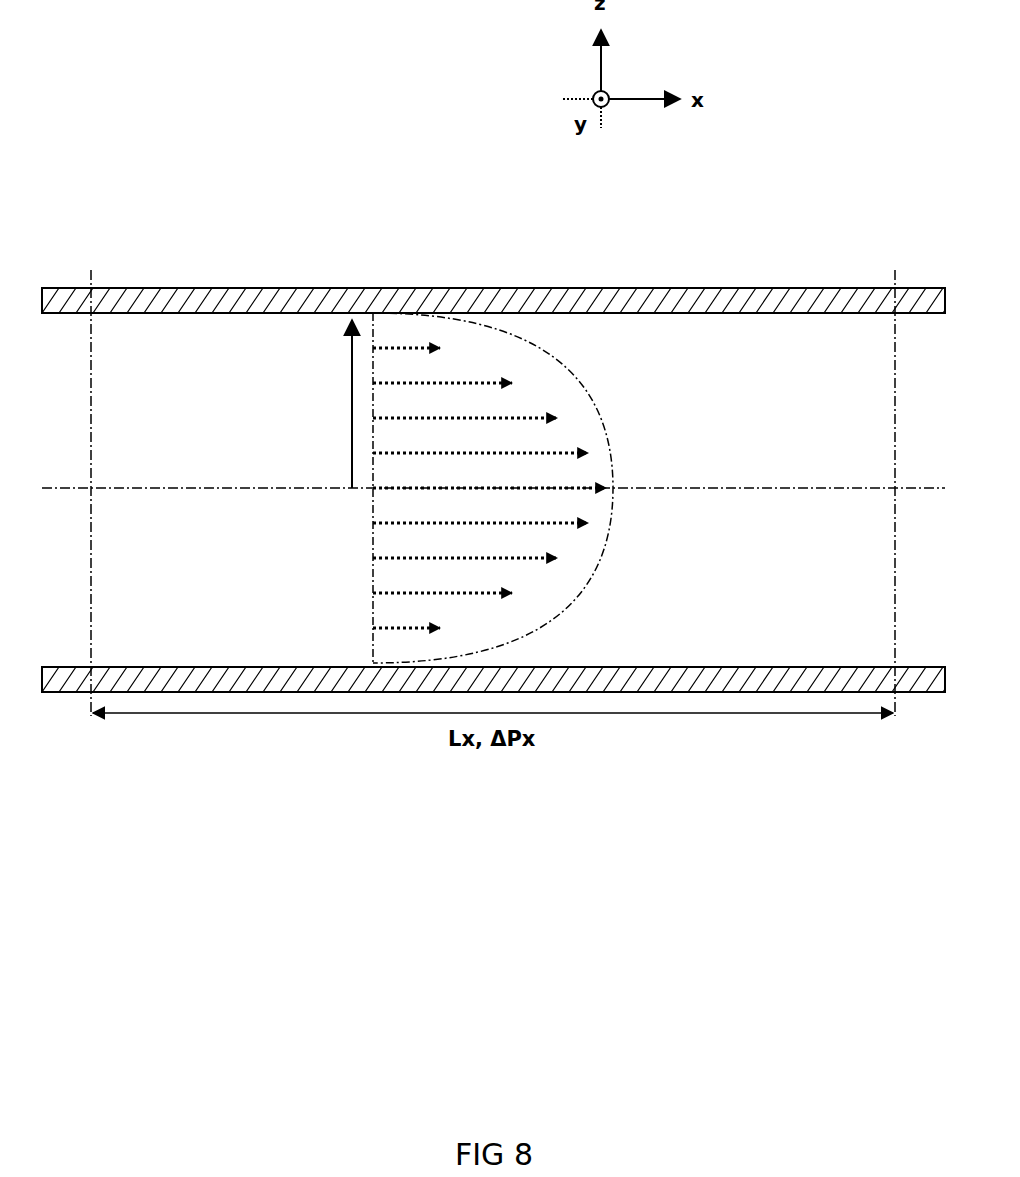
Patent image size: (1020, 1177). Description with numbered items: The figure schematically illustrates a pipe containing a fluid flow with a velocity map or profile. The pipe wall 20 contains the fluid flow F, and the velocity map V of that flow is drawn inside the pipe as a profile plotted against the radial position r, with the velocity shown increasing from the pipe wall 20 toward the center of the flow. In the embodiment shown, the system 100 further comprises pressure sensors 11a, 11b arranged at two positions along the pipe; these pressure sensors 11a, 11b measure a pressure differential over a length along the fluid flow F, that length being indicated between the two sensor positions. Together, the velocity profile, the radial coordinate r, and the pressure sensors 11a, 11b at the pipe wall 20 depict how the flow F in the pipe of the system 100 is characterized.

The flow sensing system 100 is at (103, 108).
The pipe wall 20 is at (268, 300).
The pressure sensor 11a is at (91, 262).
The pressure sensor 11b is at (895, 262).
The radial distance r is at (352, 372).
The fluid flow F is at (637, 397).